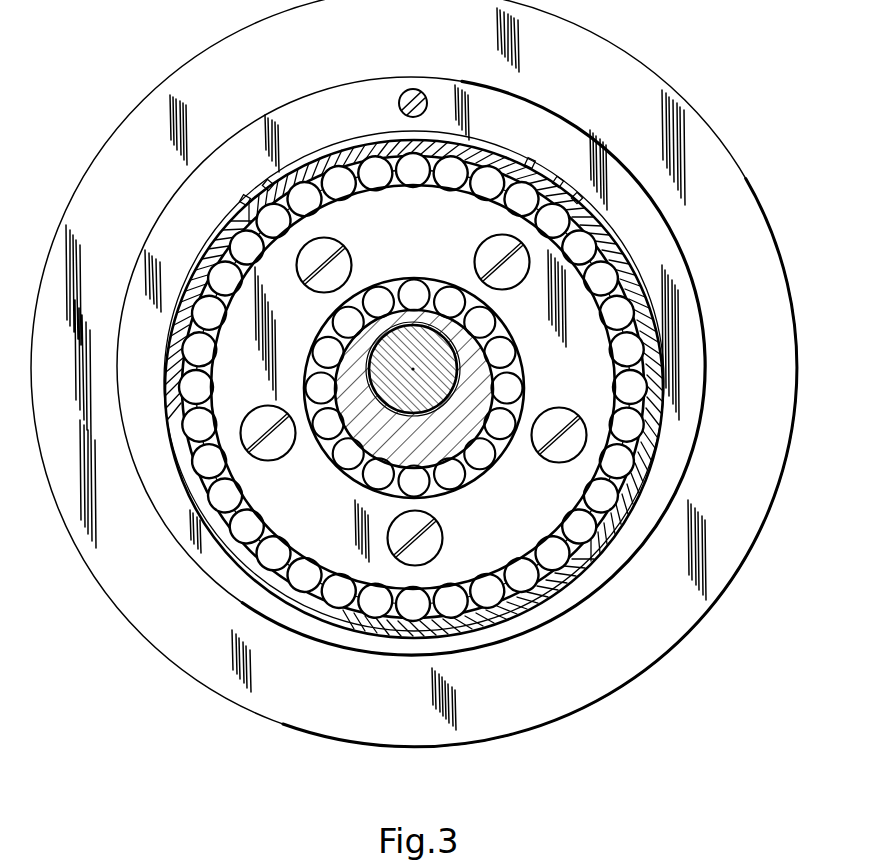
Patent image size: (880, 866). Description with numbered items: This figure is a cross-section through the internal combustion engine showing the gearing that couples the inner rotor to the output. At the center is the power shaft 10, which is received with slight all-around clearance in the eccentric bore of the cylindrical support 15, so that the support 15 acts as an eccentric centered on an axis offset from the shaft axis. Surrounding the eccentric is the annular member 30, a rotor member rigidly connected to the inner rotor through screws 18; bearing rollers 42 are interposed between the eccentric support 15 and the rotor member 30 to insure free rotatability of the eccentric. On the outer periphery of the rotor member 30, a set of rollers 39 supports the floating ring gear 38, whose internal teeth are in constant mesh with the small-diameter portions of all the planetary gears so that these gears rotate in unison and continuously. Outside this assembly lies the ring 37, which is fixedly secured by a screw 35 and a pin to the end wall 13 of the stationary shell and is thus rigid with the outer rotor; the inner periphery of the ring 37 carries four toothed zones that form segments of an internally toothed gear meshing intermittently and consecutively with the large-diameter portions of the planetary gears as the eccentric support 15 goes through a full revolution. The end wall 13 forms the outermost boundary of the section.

The power shaft 10 is at (413, 330).
The end wall 13 is at (273, 721).
The cylindrical support 15 is at (495, 369).
The screws 18 is at (447, 547).
The annular member 30 is at (527, 545).
The screw 35 is at (412, 89).
The ring 37 is at (698, 284).
The floating ring gear 38 is at (466, 150).
The rollers 39 is at (362, 162).
The bearing rollers 42 is at (332, 430).